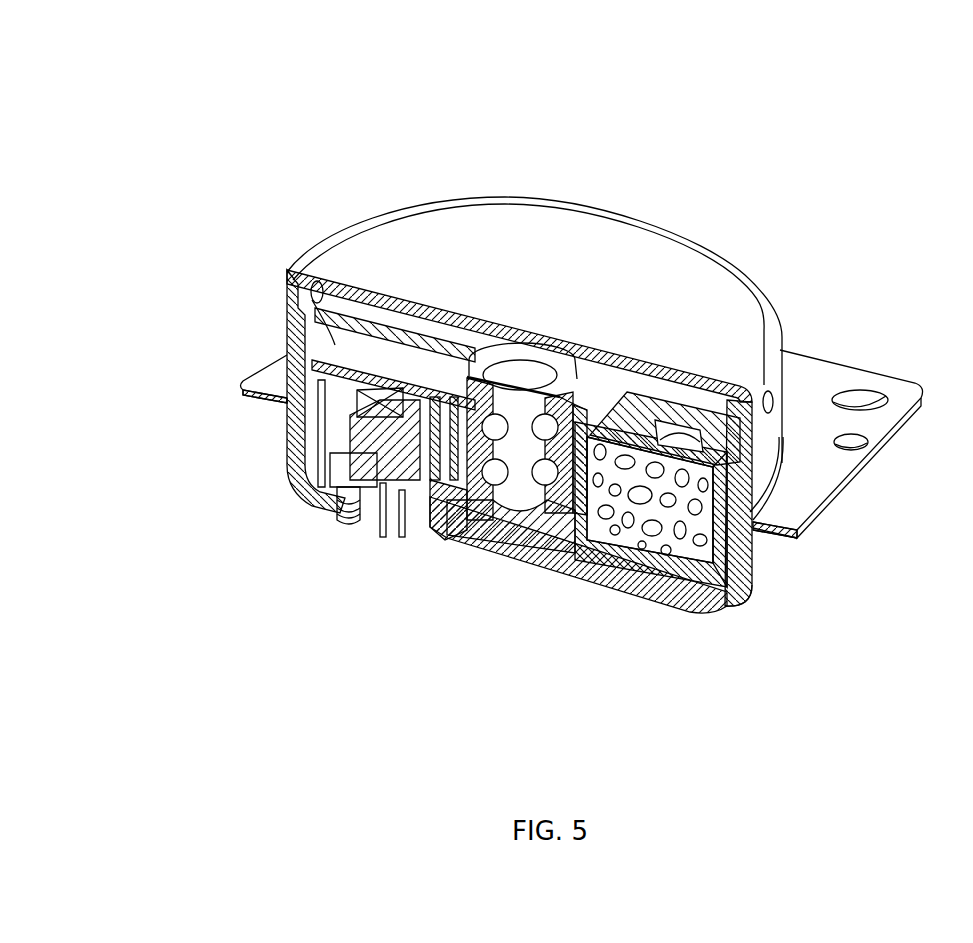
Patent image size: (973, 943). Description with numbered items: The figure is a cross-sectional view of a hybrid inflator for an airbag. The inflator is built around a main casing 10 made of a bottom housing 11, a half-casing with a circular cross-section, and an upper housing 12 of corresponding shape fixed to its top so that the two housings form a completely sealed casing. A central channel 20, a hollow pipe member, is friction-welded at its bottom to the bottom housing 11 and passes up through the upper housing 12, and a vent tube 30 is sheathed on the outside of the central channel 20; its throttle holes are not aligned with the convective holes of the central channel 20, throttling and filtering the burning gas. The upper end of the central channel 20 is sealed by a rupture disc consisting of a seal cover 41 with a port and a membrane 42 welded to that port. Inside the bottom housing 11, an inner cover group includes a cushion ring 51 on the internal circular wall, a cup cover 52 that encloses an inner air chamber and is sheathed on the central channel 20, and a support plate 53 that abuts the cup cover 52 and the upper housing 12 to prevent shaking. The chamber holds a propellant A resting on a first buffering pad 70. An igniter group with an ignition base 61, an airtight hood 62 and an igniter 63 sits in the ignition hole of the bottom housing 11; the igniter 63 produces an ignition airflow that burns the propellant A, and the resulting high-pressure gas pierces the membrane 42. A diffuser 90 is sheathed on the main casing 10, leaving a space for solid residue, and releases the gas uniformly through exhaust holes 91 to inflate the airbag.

The main casing 10 is at (757, 627).
The bottom housing 11 is at (700, 612).
The upper housing 12 is at (733, 482).
The central channel 20 is at (502, 520).
The vent tube 30 is at (545, 540).
The seal cover 41 is at (558, 380).
The membrane 42 is at (513, 388).
The cushion ring 51 is at (772, 548).
The cup cover 52 is at (630, 443).
The support plate 53 is at (748, 432).
The ignition base 61 is at (417, 537).
The airtight hood 62 is at (415, 400).
The igniter 63 is at (345, 530).
The first buffering pad 70 is at (617, 560).
The diffuser 90 is at (363, 222).
The exhaust holes 91 is at (783, 440).
The propellant A is at (667, 512).